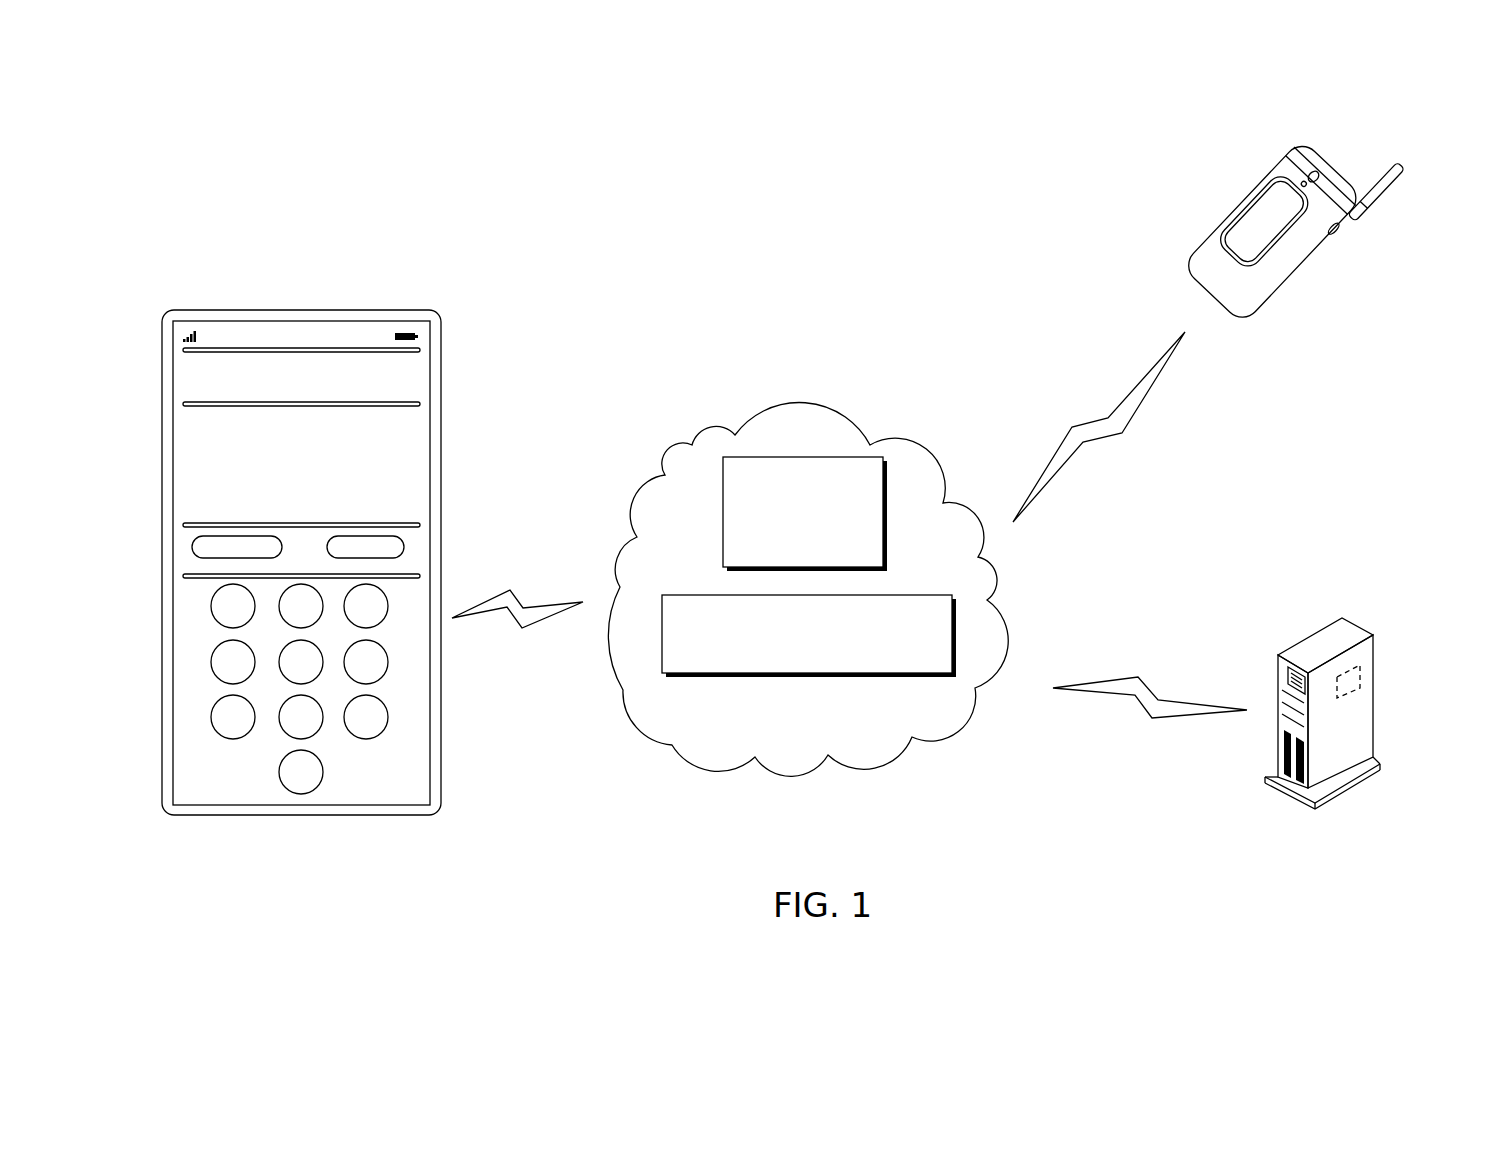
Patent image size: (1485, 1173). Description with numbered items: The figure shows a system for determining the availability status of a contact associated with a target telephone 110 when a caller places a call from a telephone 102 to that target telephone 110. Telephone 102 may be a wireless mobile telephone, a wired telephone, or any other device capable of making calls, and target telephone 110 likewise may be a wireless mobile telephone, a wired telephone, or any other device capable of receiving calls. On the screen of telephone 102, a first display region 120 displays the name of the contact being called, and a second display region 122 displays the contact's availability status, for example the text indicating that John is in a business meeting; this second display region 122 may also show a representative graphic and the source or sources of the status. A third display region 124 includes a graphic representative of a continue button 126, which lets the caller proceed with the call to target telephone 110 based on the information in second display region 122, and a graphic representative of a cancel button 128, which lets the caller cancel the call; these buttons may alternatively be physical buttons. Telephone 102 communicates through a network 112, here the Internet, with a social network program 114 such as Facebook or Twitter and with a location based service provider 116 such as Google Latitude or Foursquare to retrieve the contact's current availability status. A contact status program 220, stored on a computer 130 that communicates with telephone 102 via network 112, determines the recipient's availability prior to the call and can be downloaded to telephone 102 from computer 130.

The telephone 102 is at (335, 509).
The target telephone 110 is at (1322, 272).
The network 112 is at (794, 615).
The social network program 114 is at (888, 497).
The location based service provider 116 is at (952, 636).
The first display region 120 is at (430, 378).
The second display region 122 is at (418, 455).
The third display region 124 is at (331, 533).
The continue button 126 is at (195, 545).
The cancel button 128 is at (404, 548).
The computer 130 is at (1358, 713).
The contact status program 220 is at (1360, 668).